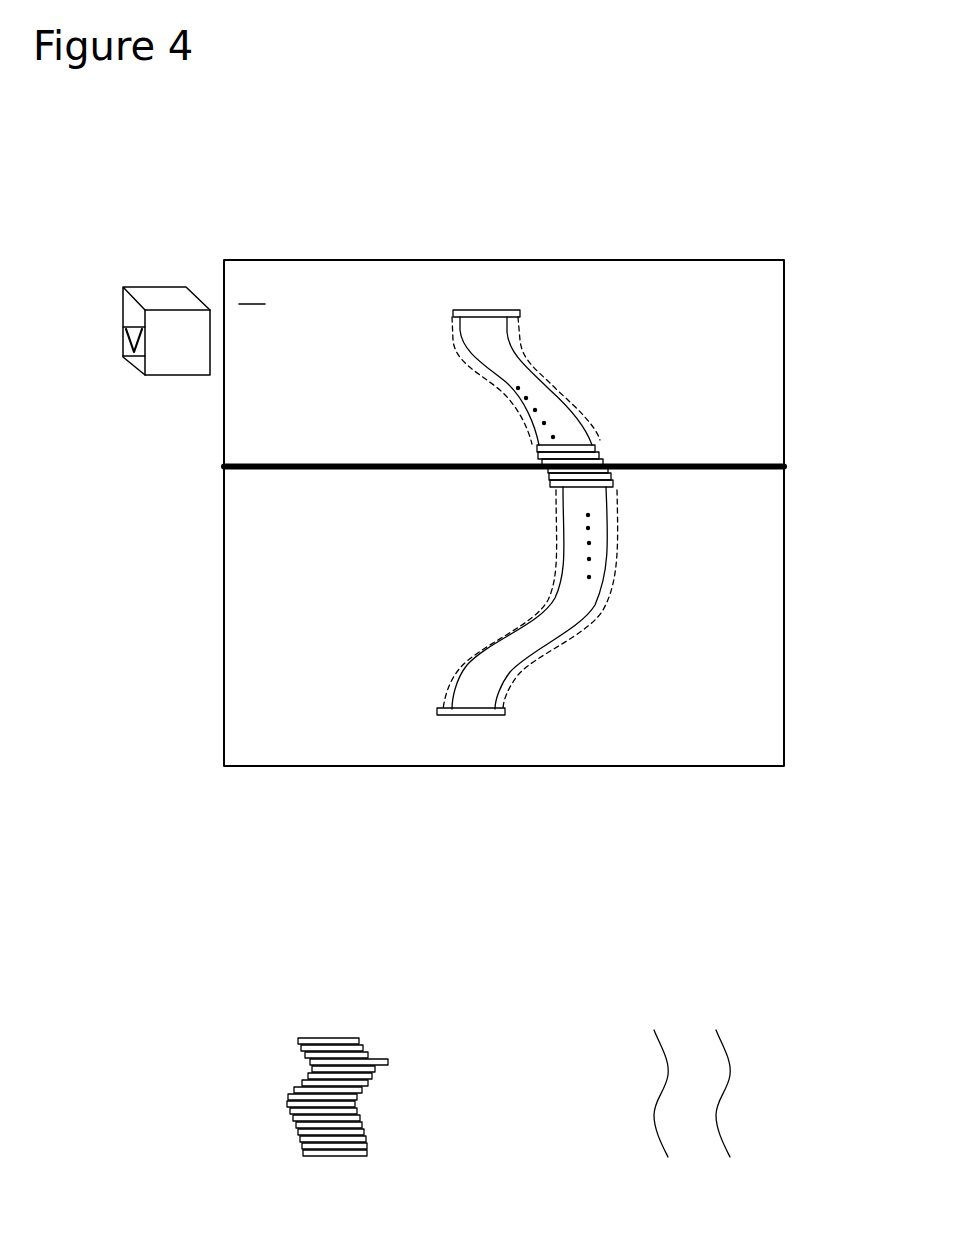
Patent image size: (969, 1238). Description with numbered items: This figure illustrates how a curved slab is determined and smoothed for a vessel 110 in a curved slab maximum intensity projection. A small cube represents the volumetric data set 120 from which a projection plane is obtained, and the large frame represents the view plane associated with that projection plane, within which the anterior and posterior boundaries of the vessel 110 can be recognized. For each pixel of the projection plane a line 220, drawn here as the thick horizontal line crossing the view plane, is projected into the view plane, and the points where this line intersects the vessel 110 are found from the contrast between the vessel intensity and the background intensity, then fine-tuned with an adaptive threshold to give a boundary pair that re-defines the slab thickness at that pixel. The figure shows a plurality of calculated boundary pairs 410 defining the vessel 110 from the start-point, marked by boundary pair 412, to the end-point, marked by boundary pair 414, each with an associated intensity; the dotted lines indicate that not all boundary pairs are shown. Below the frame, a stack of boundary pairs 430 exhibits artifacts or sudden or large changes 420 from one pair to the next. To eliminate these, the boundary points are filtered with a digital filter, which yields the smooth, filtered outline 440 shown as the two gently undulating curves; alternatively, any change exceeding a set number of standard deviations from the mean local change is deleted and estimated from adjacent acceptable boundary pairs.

The vessel 110 is at (596, 322).
The volumetric data set 120 is at (163, 402).
The line 220 is at (353, 472).
The calculated boundary pairs 410 is at (658, 408).
The start-point boundary pair 412 is at (453, 316).
The end-point boundary pair 414 is at (445, 713).
The sudden or large changes 420 is at (388, 1062).
The boundary pairs 430 is at (385, 1062).
The smooth/filtered outline 440 is at (730, 994).